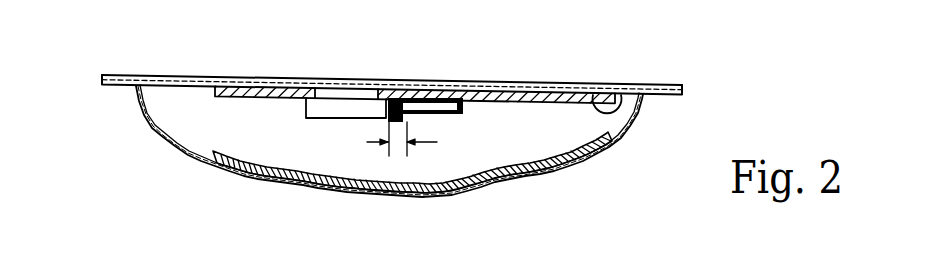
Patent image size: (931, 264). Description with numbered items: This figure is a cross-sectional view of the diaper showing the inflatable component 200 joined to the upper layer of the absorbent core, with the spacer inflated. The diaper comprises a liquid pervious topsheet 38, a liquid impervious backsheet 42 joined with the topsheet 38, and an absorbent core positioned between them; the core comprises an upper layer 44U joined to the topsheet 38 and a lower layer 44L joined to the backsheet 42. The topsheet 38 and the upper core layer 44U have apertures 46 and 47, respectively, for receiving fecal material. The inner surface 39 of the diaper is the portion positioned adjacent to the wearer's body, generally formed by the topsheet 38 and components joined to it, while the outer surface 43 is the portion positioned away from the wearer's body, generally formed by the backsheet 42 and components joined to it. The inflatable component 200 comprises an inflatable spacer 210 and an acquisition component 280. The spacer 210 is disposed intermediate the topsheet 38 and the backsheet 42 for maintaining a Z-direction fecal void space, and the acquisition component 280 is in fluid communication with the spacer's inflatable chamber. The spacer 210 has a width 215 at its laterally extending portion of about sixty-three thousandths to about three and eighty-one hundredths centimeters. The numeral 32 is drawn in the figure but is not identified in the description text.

The cover plate edge flange 32 is at (102, 78).
The topsheet 38 is at (642, 85).
The inner surface 39 is at (503, 80).
The backsheet 42 is at (278, 187).
The outer surface 43 is at (218, 165).
The upper layer 44U is at (622, 86).
The lower layer 44L is at (611, 144).
The aperture 46 is at (347, 79).
The aperture 47 is at (369, 80).
The inflatable component 200 is at (447, 133).
The inflatable spacer 210 is at (386, 119).
The width 215 is at (366, 142).
The acquisition component 280 is at (427, 114).